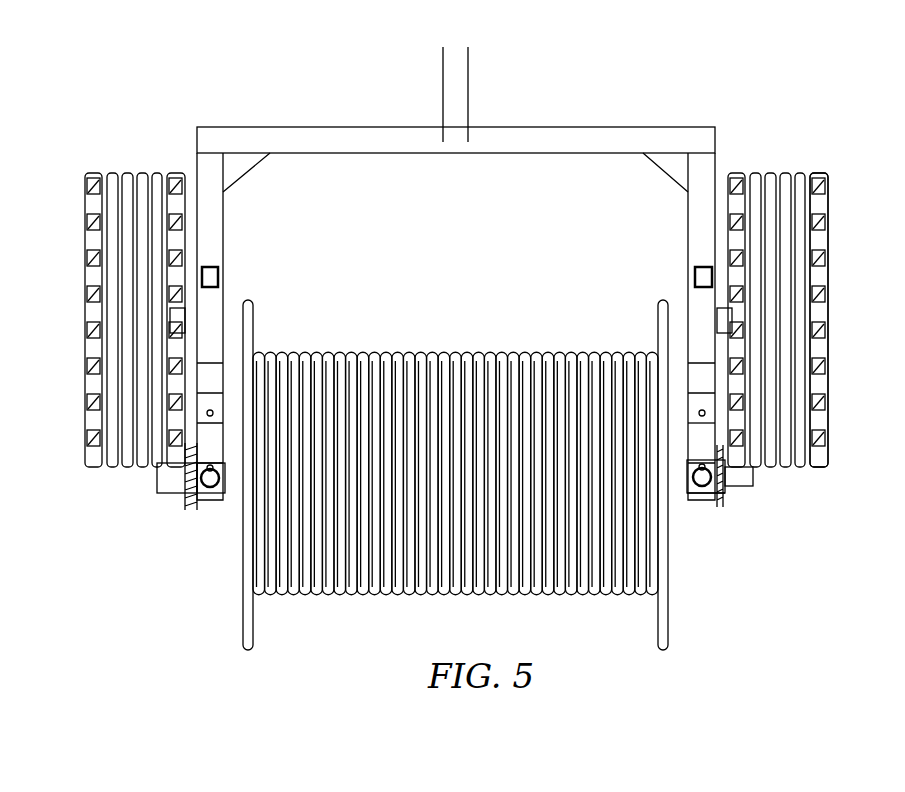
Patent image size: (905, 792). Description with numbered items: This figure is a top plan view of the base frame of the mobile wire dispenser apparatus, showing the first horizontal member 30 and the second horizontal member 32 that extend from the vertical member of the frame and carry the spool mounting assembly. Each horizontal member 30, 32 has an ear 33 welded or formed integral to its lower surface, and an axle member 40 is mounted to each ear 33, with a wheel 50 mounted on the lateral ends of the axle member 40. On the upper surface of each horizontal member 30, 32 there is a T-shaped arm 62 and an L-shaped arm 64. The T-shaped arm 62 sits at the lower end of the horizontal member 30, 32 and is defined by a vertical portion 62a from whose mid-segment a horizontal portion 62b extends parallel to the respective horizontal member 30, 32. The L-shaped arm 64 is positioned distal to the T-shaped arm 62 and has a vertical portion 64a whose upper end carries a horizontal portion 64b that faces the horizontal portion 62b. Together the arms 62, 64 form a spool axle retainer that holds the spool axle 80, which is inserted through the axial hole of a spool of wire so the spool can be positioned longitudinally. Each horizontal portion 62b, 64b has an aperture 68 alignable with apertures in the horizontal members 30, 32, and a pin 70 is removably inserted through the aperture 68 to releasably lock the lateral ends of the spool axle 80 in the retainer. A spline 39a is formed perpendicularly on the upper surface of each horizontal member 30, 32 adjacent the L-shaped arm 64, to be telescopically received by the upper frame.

The first horizontal member 30 is at (688, 210).
The second horizontal member 32 is at (205, 168).
The ear 33 is at (196, 314).
The spline 39a is at (220, 274).
The axle member 40 is at (716, 317).
The wheel 50 is at (787, 173).
The T-shaped arm 62 is at (720, 500).
The vertical portion 62a is at (697, 495).
The horizontal portion 62b is at (217, 492).
The L-shaped arm 64 is at (712, 403).
The vertical portion 64a is at (703, 395).
The horizontal portion 64b is at (203, 398).
The aperture 68 is at (206, 469).
The pin 70 is at (197, 477).
The spool axle 80 is at (753, 483).